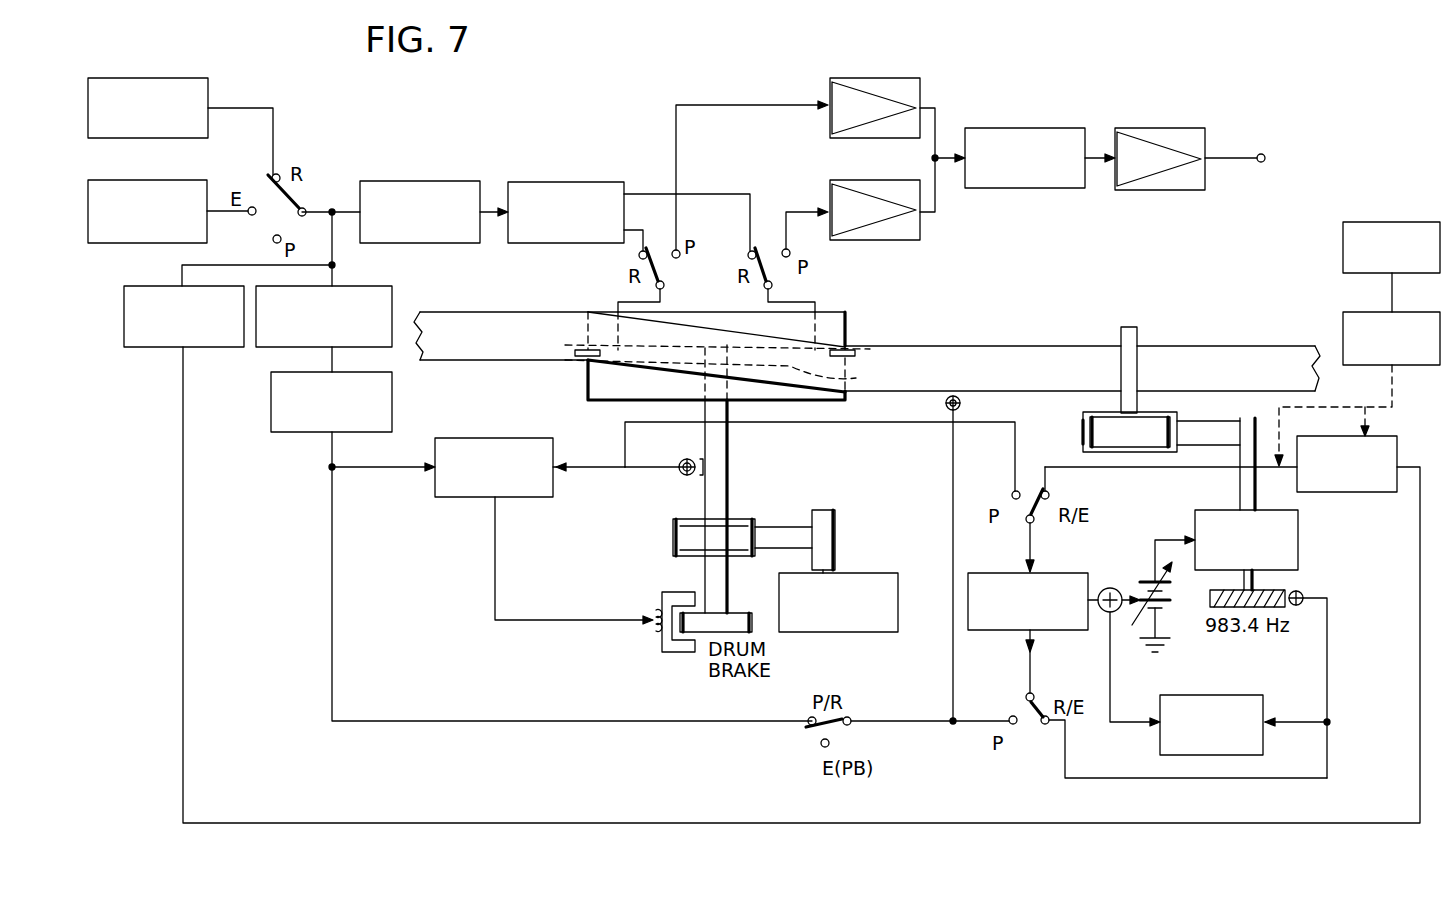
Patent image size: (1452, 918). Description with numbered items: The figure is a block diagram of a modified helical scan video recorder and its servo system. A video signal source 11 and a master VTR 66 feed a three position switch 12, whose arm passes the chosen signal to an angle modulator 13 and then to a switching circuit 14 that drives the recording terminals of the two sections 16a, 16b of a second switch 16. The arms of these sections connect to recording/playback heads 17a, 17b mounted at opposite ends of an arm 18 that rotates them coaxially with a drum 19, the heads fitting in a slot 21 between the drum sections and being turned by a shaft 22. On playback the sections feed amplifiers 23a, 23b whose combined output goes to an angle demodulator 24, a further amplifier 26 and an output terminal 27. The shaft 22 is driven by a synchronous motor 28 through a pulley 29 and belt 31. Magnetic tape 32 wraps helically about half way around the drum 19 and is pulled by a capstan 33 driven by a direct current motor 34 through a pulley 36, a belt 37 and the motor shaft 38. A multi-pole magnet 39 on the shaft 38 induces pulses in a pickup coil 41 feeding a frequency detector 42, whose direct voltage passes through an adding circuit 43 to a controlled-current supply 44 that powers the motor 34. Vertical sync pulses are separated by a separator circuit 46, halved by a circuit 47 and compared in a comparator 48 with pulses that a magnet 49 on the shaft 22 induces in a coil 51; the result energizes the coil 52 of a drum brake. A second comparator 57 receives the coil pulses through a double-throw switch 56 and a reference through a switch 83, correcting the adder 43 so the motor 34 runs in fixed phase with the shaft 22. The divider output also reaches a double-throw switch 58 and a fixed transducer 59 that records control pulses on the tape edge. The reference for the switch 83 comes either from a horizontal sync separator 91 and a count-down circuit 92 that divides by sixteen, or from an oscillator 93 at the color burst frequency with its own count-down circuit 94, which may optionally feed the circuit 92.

The video signal source 11 is at (172, 78).
The master VTR 66 is at (170, 180).
The three position switch 12 is at (300, 206).
The angle modulator 13 is at (455, 160).
The switching circuit 14 is at (583, 182).
The second switch 16 is at (711, 298).
The switch section 16a is at (645, 284).
The switch section 16b is at (777, 272).
The recording/playback head 17a is at (585, 352).
The recording/playback head 17b is at (862, 349).
The arm 18 is at (726, 377).
The drum 19 is at (848, 316).
The slot 21 is at (870, 349).
The shaft 22 is at (730, 446).
The amplifier 23a is at (857, 78).
The amplifier 23b is at (848, 180).
The angle demodulator 24 is at (1030, 128).
The amplifier 26 is at (1150, 128).
The output terminal 27 is at (1258, 152).
The synchronous motor 28 is at (880, 573).
The pulley 29 is at (673, 527).
The belt 31 is at (776, 526).
The magnetic tape 32 is at (1057, 346).
The capstan 33 is at (1140, 341).
The direct current motor 34 is at (1298, 532).
The pulley 36 is at (1168, 418).
The belt 37 is at (1085, 431).
The shaft 38 is at (1240, 490).
The multi-pole magnet 39 is at (1208, 607).
The pickup coil 41 is at (1305, 592).
The frequency detector 42 is at (1265, 740).
The adding circuit 43 is at (1120, 580).
The controlled-current supply 44 is at (1147, 625).
The synchronizing signal separator circuit 46 is at (393, 305).
The divide-by-two circuit 47 is at (393, 398).
The comparator 48 is at (462, 498).
The magnet 49 is at (700, 458).
The coil 51 is at (682, 476).
The drum brake coil 52 is at (658, 633).
The double-throw switch 56 is at (1032, 728).
The second comparator 57 is at (983, 631).
The double-throw switch 58 is at (848, 729).
The fixed transducer 59 is at (962, 405).
The switch 83 is at (1035, 510).
The horizontal synchronizing signal separator circuit 91 is at (124, 323).
The count-down circuit 92 is at (1335, 492).
The oscillator 93 is at (1385, 222).
The count-down circuit 94 is at (1355, 312).